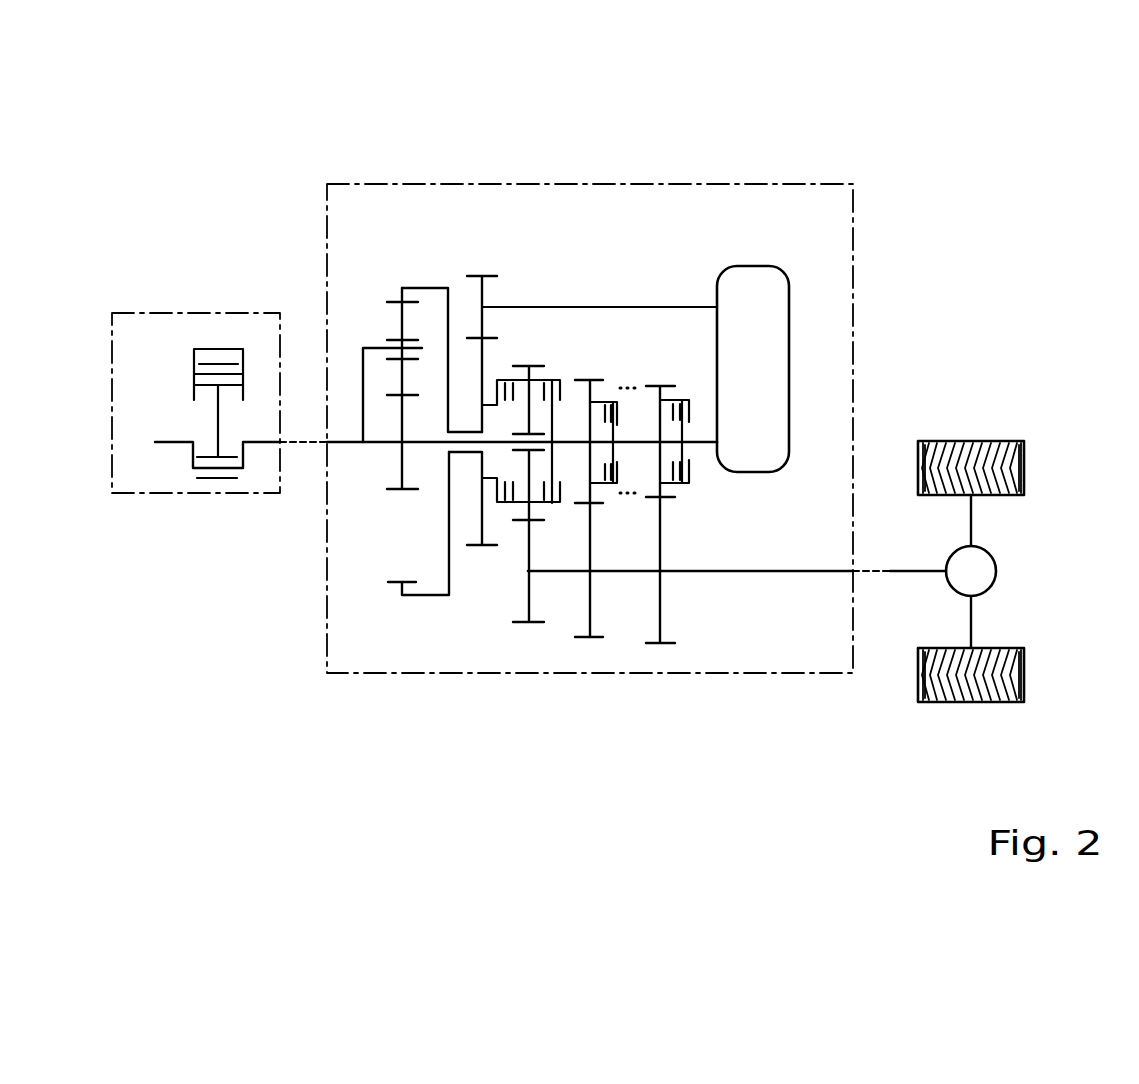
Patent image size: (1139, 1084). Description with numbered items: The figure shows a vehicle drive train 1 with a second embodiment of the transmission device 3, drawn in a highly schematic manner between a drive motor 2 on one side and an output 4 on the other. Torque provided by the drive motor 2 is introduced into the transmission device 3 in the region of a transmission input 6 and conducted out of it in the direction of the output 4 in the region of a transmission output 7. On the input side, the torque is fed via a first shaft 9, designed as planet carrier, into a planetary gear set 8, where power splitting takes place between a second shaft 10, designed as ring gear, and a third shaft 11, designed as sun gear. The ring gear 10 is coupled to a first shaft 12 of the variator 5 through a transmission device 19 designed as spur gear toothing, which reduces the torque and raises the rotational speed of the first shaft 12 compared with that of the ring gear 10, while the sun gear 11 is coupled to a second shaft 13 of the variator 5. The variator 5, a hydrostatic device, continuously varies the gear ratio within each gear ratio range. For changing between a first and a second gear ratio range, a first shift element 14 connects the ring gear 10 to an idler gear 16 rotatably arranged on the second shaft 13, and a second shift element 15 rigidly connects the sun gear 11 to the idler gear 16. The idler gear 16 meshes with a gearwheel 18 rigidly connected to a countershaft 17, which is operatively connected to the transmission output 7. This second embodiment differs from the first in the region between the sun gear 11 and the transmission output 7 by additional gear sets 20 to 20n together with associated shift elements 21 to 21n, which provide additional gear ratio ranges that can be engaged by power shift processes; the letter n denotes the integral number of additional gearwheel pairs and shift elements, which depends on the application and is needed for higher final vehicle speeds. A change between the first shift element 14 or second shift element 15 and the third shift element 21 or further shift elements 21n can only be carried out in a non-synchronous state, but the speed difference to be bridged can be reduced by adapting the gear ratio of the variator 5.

The vehicle drive train 1 is at (158, 203).
The drive motor 2 is at (222, 313).
The transmission device 3 is at (327, 232).
The output 4 is at (970, 702).
The variator 5 is at (753, 373).
The transmission input 6 is at (325, 443).
The transmission output 7 is at (853, 573).
The planetary gear set 8 is at (414, 272).
The first shaft 9 is at (375, 348).
The second shaft 10 is at (432, 287).
The third shaft 11 is at (399, 480).
The first shaft of the variator 12 is at (668, 307).
The second shaft of the variator 13 is at (706, 444).
The first shift element 14 is at (503, 520).
The second shift element 15 is at (548, 512).
The idler gear 16 is at (543, 366).
The countershaft 17 is at (800, 572).
The gearwheel 18 is at (517, 623).
The transmission device 19 is at (493, 323).
The additional gear set 20 is at (607, 518).
The n-th additional gear set 20n is at (685, 508).
The third shift element 21 is at (610, 383).
The n-th additional shift element 21n is at (683, 378).